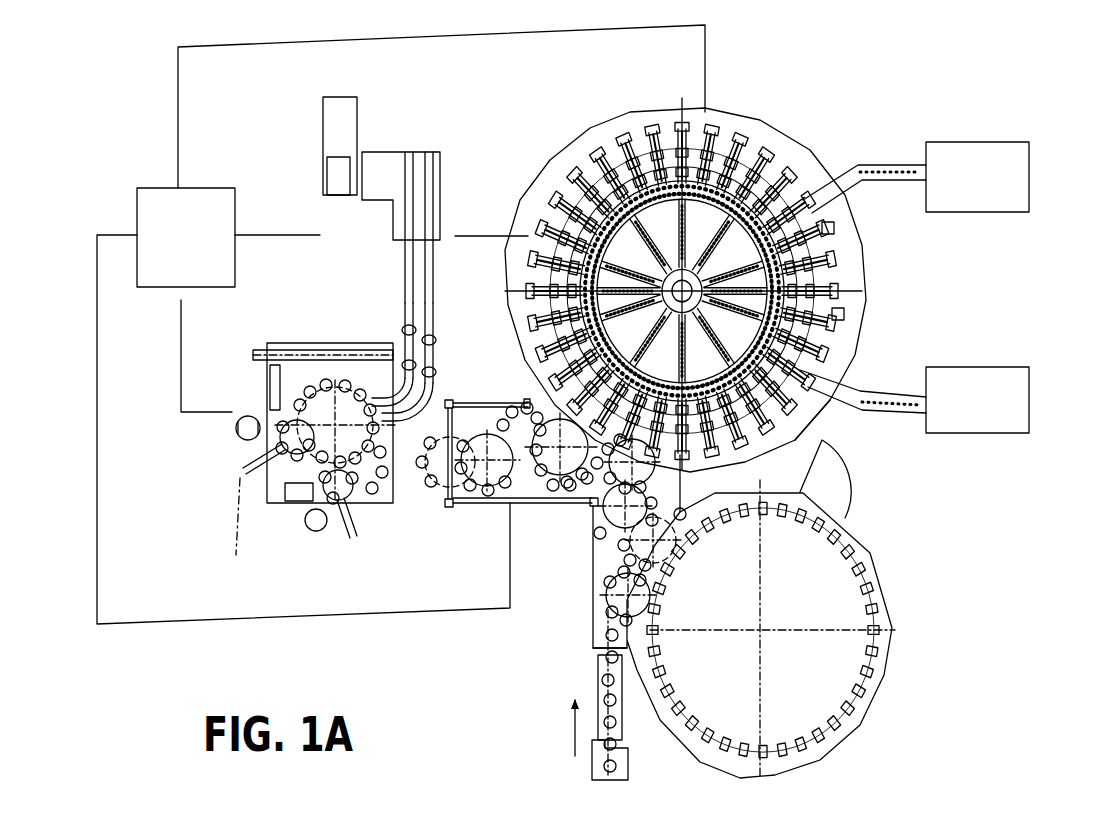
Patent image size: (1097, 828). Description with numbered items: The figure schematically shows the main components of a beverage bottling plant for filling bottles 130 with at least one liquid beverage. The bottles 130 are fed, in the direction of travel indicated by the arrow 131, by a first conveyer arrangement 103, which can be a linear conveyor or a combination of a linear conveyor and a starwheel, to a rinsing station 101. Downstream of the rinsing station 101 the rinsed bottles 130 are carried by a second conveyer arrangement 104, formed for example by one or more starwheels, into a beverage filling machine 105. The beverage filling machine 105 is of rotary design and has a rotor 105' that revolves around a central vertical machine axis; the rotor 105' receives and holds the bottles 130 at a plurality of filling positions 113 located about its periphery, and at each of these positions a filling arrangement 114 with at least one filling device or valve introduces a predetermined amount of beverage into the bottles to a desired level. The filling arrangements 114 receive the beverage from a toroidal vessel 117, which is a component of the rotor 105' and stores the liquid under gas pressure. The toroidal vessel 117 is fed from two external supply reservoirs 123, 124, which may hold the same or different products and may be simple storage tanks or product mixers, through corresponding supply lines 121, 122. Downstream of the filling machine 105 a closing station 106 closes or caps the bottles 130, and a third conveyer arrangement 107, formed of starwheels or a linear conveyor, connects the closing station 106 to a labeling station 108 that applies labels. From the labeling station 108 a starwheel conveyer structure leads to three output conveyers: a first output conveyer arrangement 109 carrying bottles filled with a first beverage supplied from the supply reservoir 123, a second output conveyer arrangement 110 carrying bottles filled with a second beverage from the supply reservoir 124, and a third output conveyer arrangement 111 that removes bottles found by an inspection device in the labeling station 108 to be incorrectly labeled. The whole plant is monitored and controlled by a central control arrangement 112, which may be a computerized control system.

The rinsing station 101 is at (905, 534).
The first conveyer arrangement 103 is at (628, 706).
The second conveyer arrangement 104 is at (600, 562).
The beverage filling machine 105 is at (733, 284).
The rotor 105' is at (685, 277).
The closing station 106 is at (502, 397).
The third conveyer arrangement 107 is at (456, 512).
The labeling station 108 is at (297, 545).
The first output conveyer arrangement 109 is at (434, 326).
The second output conveyer arrangement 110 is at (405, 268).
The third output conveyer arrangement 111 is at (300, 348).
The central control arrangement 112 is at (186, 237).
The filling positions 113 is at (836, 228).
The filling arrangement 114 is at (844, 315).
The toroidal vessel 117 is at (792, 428).
The supply line 121 is at (878, 165).
The supply line 122 is at (880, 390).
The supply reservoir 123 is at (1018, 182).
The supply reservoir 124 is at (1030, 402).
The bottles 130 is at (614, 745).
The arrow 131 is at (554, 728).